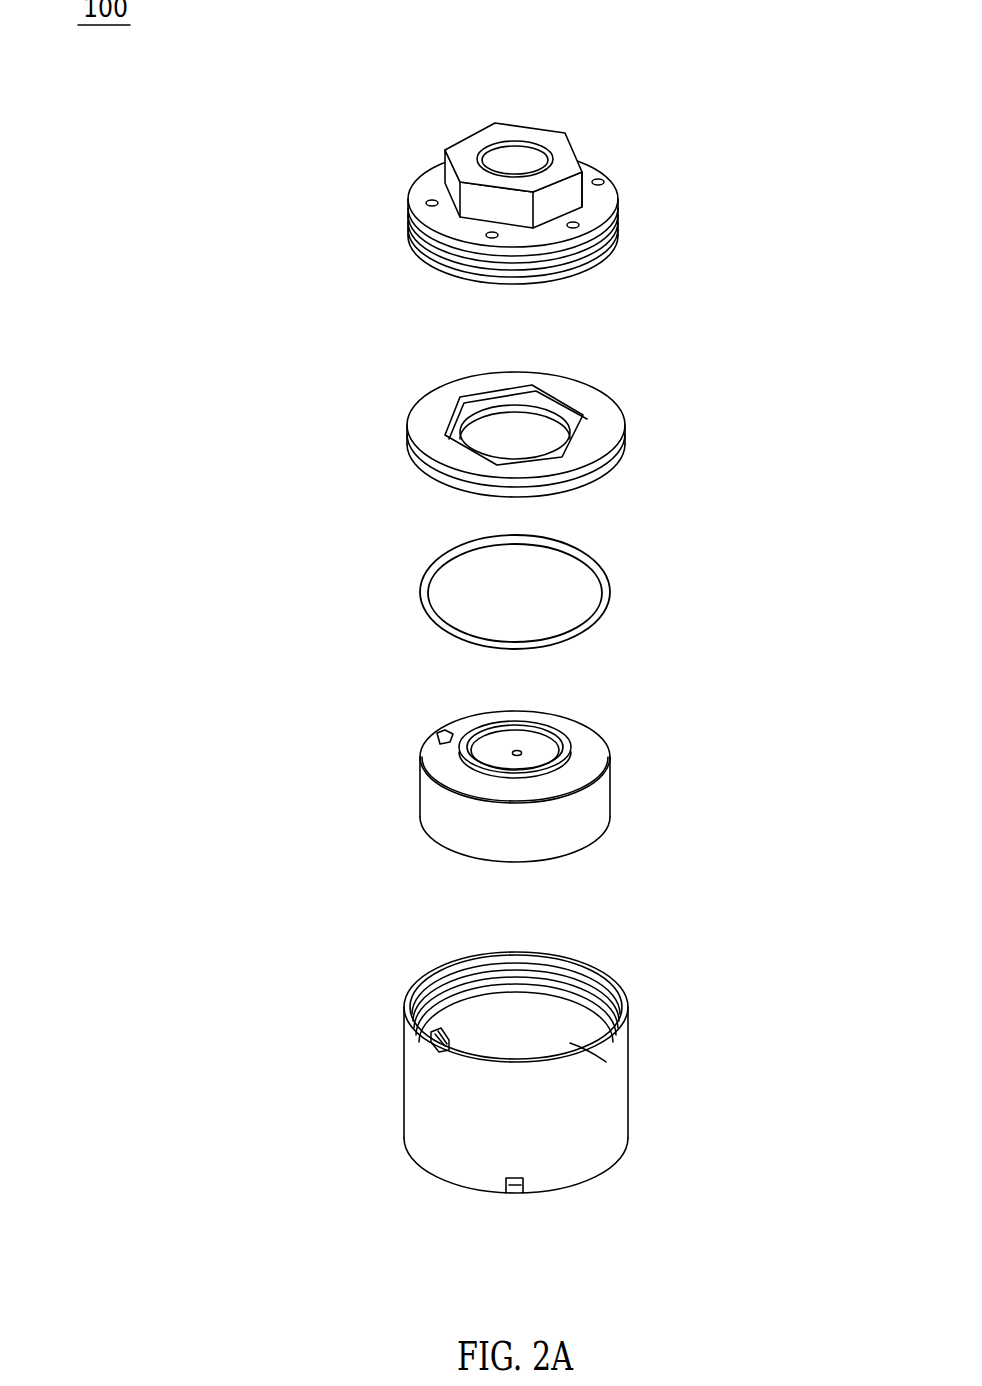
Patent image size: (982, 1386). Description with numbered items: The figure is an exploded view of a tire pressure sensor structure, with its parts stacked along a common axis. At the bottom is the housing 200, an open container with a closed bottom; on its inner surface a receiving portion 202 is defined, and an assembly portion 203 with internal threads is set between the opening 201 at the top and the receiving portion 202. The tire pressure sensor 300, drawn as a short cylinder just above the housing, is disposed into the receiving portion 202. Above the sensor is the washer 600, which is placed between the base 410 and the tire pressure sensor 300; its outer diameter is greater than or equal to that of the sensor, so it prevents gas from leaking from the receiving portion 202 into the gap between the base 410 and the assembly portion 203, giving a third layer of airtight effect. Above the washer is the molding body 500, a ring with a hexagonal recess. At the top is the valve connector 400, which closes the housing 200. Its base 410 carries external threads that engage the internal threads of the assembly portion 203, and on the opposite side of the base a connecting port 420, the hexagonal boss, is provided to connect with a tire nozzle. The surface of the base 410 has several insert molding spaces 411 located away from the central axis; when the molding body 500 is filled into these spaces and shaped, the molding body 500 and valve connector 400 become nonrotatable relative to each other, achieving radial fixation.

The housing 200 is at (628, 1103).
The opening 201 is at (632, 938).
The receiving portion 202 is at (570, 1043).
The assembly portion 203 is at (428, 985).
The tire pressure sensor 300 is at (437, 808).
The valve connector 400 is at (613, 113).
The base 410 is at (610, 255).
The insert molding spaces 411 is at (580, 215).
The connecting port 420 is at (463, 150).
The molding body 500 is at (423, 420).
The washer 600 is at (425, 593).